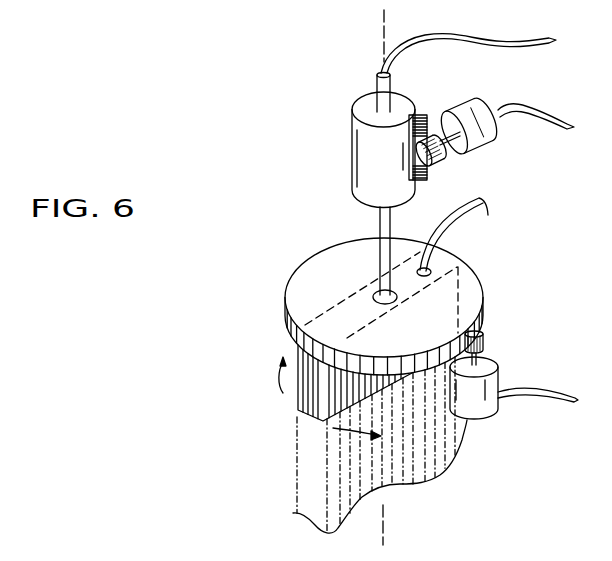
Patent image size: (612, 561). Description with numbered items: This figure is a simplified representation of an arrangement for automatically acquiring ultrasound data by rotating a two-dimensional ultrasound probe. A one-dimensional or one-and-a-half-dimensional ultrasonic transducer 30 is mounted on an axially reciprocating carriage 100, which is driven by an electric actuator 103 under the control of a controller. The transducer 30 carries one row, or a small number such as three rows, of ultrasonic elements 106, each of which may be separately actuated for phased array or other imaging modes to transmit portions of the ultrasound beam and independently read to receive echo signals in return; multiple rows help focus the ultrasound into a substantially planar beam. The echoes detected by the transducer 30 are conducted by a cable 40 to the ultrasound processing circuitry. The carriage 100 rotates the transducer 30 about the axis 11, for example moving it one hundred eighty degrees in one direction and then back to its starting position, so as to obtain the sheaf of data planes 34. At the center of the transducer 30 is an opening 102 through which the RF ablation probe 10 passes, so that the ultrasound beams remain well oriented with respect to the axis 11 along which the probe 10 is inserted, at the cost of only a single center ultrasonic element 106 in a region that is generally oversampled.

The RF ablation probe 10 is at (380, 223).
The axis 11 is at (382, 32).
The reciprocating carriage 100 is at (320, 270).
The opening 102 is at (374, 299).
The electric actuator 103 is at (492, 363).
The ultrasonic transducer 30 is at (301, 398).
The ultrasonic elements 106 is at (333, 428).
The sheaf of data planes 34 is at (271, 497).
The cable 40 is at (457, 223).